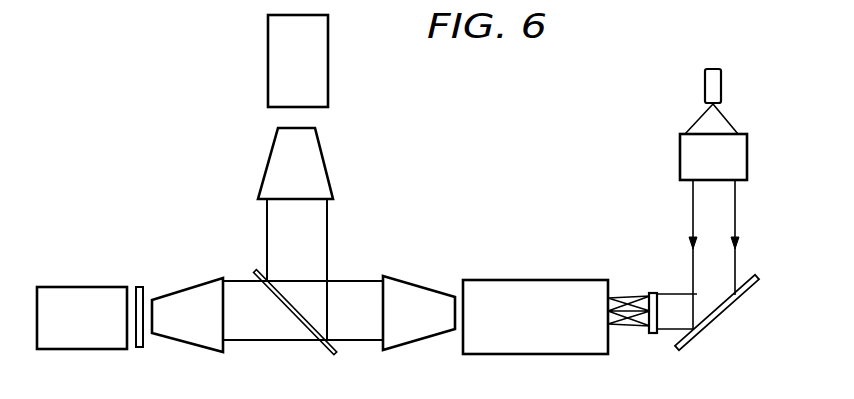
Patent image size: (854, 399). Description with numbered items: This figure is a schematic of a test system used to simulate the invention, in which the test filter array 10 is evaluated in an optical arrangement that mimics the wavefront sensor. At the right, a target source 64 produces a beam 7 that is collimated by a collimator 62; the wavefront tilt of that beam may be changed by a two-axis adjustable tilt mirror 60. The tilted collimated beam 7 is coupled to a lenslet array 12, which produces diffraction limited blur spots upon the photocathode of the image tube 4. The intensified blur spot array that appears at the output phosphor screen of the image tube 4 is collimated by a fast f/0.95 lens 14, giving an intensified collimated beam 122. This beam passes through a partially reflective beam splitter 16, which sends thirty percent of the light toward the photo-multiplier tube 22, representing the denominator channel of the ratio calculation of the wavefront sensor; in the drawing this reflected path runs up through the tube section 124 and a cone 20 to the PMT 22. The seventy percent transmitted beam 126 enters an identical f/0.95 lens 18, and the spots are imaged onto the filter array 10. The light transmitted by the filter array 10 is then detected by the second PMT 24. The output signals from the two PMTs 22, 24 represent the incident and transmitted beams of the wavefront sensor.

The image tube 4 is at (520, 280).
The beam 7 is at (737, 208).
The filter array 10 is at (145, 285).
The lenslet array 12 is at (674, 300).
The lens 14 is at (430, 330).
The beam splitter 16 is at (297, 318).
The lens 18 is at (197, 343).
The cone lens 20 is at (335, 167).
The photo-multiplier tube 22 is at (330, 88).
The second PMT 24 is at (93, 341).
The tilt mirror 60 is at (712, 326).
The collimator 62 is at (680, 157).
The target source 64 is at (705, 88).
The intensified collimated beam 122 is at (338, 281).
The tube section 124 is at (327, 232).
The transmitted beam 126 is at (240, 281).